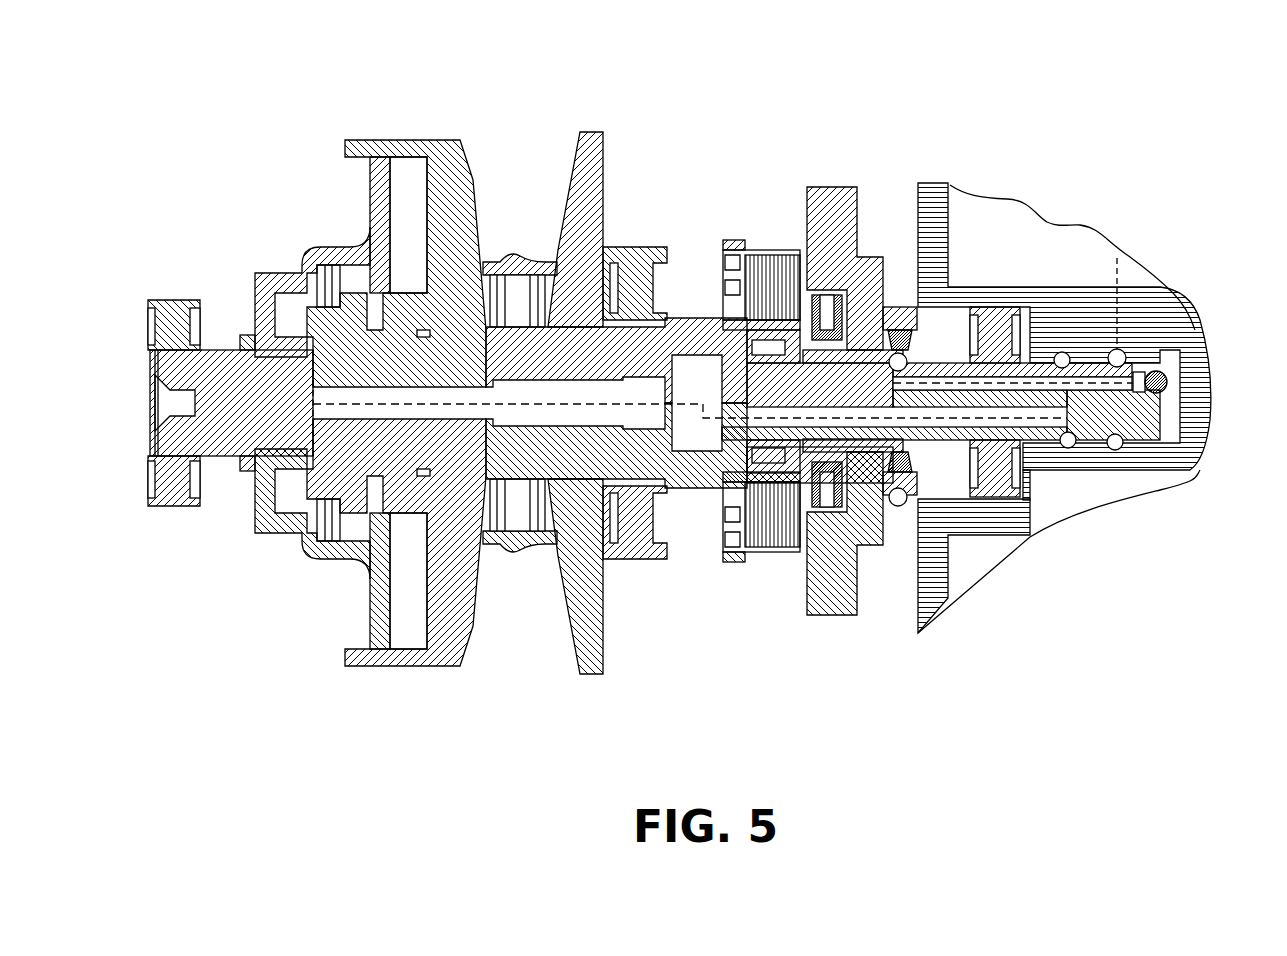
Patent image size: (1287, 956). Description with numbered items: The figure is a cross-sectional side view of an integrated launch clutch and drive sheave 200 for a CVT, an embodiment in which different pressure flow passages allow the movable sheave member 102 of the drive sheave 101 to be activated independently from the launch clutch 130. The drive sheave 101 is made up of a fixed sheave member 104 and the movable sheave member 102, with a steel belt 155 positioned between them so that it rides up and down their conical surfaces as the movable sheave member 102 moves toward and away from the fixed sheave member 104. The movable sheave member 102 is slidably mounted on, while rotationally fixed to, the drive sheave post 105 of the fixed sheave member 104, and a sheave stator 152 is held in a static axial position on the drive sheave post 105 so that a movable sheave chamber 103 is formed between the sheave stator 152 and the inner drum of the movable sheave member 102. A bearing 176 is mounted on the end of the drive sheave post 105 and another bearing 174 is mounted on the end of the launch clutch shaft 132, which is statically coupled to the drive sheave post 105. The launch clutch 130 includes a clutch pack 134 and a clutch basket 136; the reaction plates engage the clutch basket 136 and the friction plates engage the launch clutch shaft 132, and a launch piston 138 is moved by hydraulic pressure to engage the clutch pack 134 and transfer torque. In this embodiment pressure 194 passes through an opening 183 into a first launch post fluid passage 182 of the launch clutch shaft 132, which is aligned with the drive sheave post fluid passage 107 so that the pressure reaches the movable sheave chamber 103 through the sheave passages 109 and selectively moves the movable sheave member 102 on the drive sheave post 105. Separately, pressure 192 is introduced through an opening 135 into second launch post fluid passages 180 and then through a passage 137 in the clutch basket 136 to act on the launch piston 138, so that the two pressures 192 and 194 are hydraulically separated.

The integrated launch clutch and drive sheave 200 is at (1043, 92).
The drive sheave 101 is at (675, 688).
The movable sheave member 102 is at (458, 163).
The movable sheave chamber 103 is at (417, 177).
The fixed sheave member 104 is at (597, 150).
The drive sheave post 105 is at (560, 463).
The drive sheave post fluid passage 107 is at (583, 417).
The sheave passages 109 is at (307, 357).
The launch clutch 130 is at (894, 658).
The launch clutch shaft 132 is at (1153, 410).
The clutch pack 134 is at (801, 230).
The opening 135 is at (1150, 360).
The clutch basket 136 is at (830, 275).
The passage 137 is at (900, 352).
The launch piston 138 is at (840, 327).
The sheave stator 152 is at (307, 260).
The belt 155 is at (533, 247).
The bearing 174 is at (998, 310).
The bearing 176 is at (628, 263).
The second launch post fluid passages 180 is at (1060, 380).
The first launch post fluid passage 182 is at (997, 420).
The opening 183 is at (1077, 433).
The pressure 192 is at (1117, 281).
The pressure 194 is at (1063, 463).